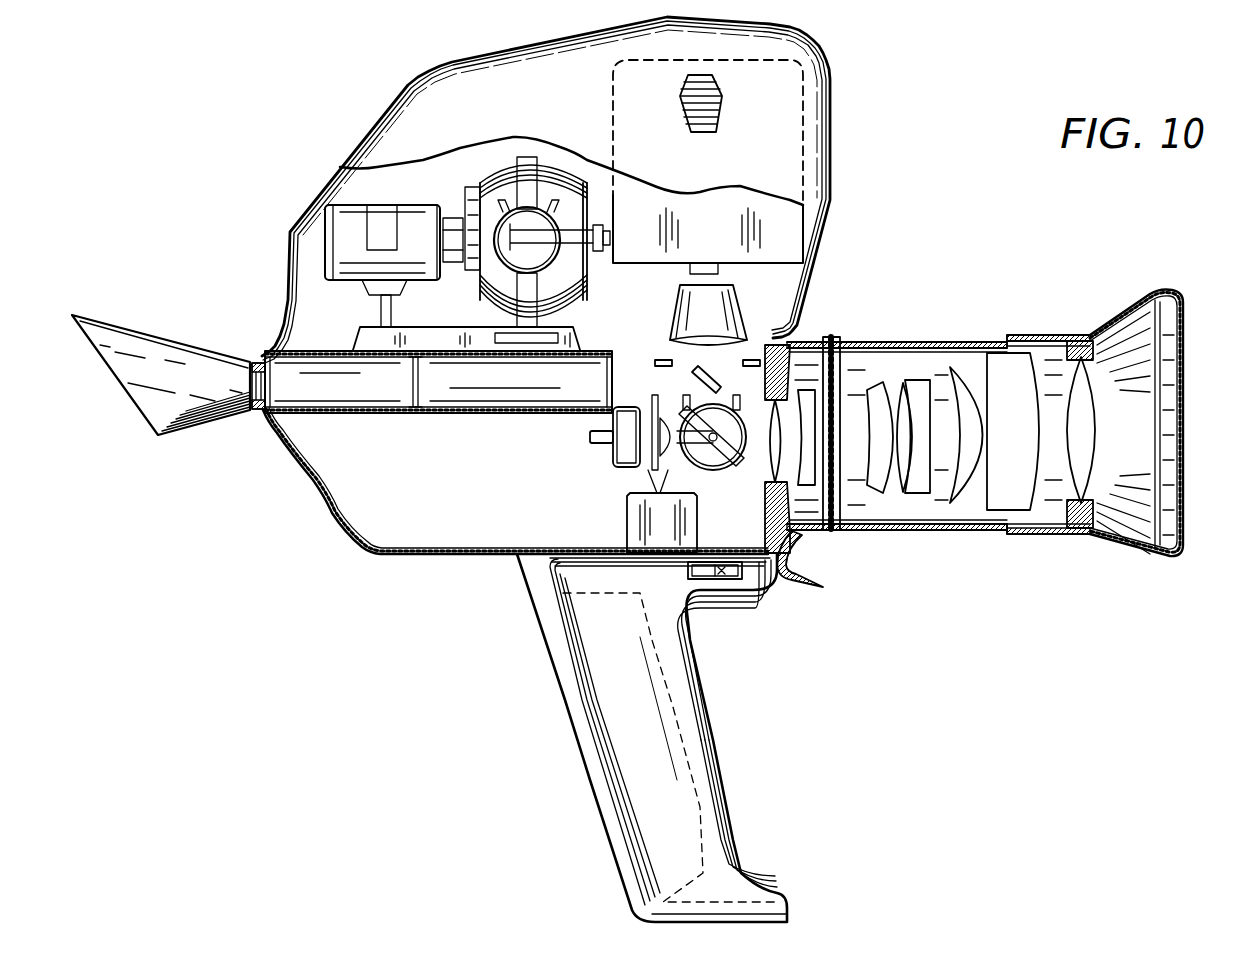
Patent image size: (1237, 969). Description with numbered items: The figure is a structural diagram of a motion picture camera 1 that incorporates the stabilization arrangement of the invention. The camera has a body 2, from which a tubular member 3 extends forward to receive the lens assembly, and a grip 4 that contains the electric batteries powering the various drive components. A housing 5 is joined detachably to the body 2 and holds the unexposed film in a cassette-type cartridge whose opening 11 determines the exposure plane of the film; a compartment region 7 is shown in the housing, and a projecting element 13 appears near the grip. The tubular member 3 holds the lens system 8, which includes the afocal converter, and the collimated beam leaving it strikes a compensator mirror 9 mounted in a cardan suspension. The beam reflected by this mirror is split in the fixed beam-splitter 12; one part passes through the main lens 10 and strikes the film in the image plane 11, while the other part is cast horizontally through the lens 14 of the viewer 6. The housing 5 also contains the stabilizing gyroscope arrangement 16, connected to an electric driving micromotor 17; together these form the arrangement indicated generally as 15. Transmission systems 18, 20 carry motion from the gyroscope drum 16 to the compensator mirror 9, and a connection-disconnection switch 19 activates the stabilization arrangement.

The camera 1 is at (627, 465).
The body 2 is at (327, 480).
The tubular member 3 is at (930, 340).
The grip 4 is at (574, 773).
The housing 5 is at (503, 52).
The viewer 6 is at (259, 421).
The battery compartment 7 is at (803, 92).
The lens system 8 is at (905, 493).
The compensator mirror 9 is at (720, 460).
The main lens 10 is at (676, 310).
The opening 11 is at (722, 270).
The fixed beam-splitter 12 is at (702, 380).
The trigger hook 13 is at (797, 578).
The lens of the viewer 14 is at (492, 402).
The stabilization arrangement 15 is at (452, 198).
The stabilizing gyroscope arrangement 16 is at (557, 168).
The electric driving micromotor 17 is at (342, 200).
The transmission system 18 is at (502, 246).
The connection-disconnection switch 19 is at (727, 581).
The transmission system 20 is at (599, 443).